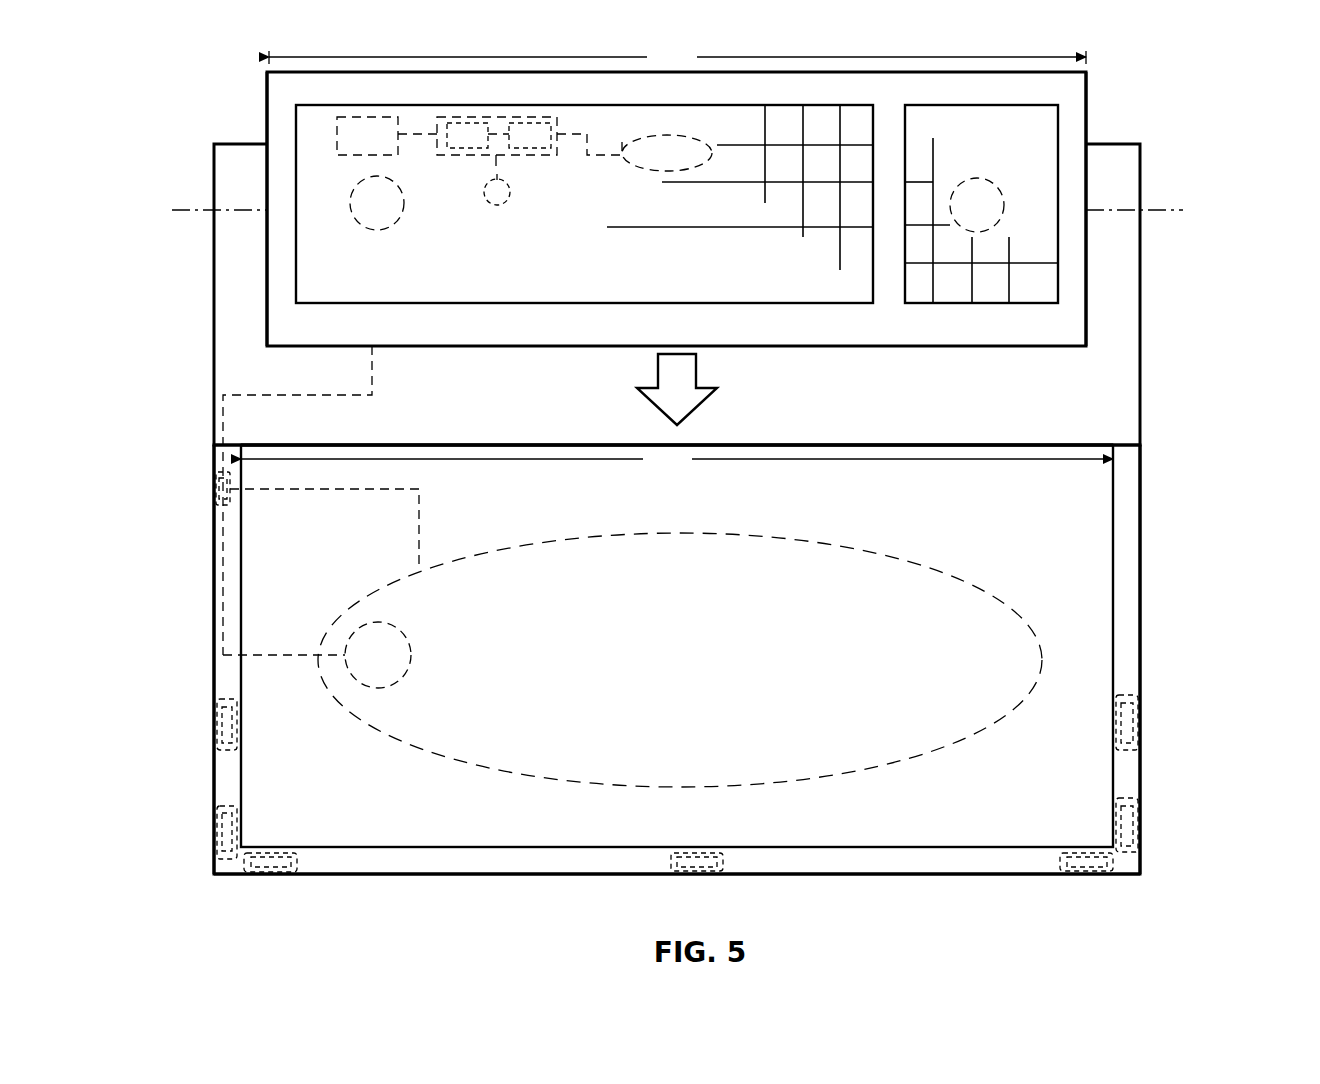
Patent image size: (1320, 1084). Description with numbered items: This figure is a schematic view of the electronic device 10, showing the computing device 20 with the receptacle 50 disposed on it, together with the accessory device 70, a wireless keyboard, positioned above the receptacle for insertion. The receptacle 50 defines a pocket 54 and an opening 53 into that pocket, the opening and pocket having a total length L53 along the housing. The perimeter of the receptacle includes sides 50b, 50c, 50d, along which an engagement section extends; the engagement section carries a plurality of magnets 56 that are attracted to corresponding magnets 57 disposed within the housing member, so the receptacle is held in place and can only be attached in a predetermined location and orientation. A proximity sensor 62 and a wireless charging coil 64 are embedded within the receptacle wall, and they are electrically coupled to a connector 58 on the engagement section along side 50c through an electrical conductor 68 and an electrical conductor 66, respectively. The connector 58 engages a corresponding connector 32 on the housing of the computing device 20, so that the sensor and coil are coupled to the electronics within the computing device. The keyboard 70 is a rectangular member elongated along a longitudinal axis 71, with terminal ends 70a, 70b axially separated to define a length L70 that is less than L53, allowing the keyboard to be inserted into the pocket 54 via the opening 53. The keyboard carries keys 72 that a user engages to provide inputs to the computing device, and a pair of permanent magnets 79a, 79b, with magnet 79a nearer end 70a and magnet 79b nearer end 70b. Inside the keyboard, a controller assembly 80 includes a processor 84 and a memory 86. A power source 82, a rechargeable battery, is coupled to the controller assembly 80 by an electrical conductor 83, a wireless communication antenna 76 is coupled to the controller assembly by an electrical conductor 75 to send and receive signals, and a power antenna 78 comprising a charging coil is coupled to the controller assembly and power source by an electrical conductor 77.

The electronic device 10 is at (703, 484).
The computing device 20 is at (210, 178).
The connector 32 is at (215, 487).
The receptacle 50 is at (1171, 482).
The side 50b is at (595, 877).
The side 50c is at (212, 778).
The side 50d is at (1141, 640).
The opening 53 is at (763, 442).
The pocket 54 is at (1093, 577).
The magnets 56 is at (220, 730).
The magnets 57 is at (667, 803).
The connector 58 is at (221, 513).
The proximity sensor 62 is at (400, 632).
The wireless charging coil 64 is at (815, 537).
The electrical conductor 66 is at (420, 500).
The electrical conductor 68 is at (277, 655).
The accessory device 70 is at (1090, 98).
The terminal end 70a is at (267, 113).
The terminal end 70b is at (1090, 307).
The longitudinal axis 71 is at (208, 212).
The keys 72 is at (822, 117).
The electrical conductor 75 is at (500, 164).
The wireless communication antenna 76 is at (517, 209).
The electrical conductor 77 is at (582, 138).
The power antenna 78 is at (642, 170).
The magnet 79a is at (386, 228).
The magnet 79b is at (971, 178).
The controller assembly 80 is at (493, 146).
The power source 82 is at (357, 156).
The electrical conductor 83 is at (420, 134).
The processor 84 is at (447, 143).
The memory 86 is at (557, 146).